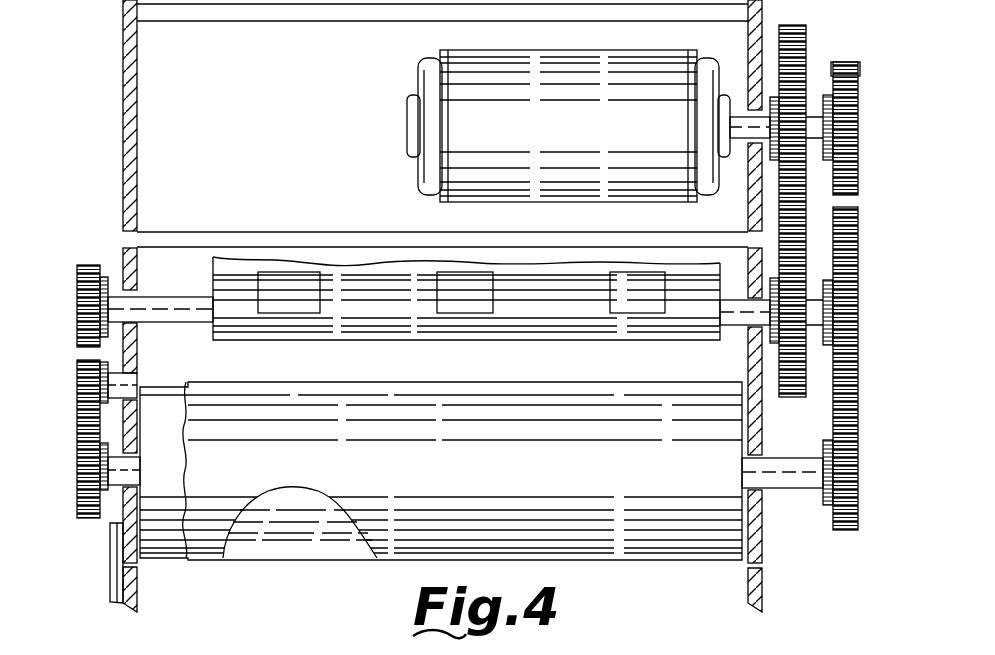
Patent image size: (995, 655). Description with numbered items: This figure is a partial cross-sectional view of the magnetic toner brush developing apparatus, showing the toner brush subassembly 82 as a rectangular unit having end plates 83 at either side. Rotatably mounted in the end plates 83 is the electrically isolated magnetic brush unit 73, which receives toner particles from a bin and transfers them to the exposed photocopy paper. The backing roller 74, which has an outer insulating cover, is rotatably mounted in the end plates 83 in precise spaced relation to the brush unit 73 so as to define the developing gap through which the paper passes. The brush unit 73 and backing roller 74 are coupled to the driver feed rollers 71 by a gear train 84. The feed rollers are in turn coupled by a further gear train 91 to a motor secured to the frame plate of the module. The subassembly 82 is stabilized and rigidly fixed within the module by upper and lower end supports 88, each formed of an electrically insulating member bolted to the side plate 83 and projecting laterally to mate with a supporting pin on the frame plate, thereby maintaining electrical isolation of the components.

The pinch rollers 71 is at (872, 232).
The magnetic brush unit 73 is at (668, 560).
The backing roller 74 is at (303, 540).
The toner brush subassembly 82 is at (123, 58).
The end plates 83 is at (123, 262).
The gear train 84 is at (70, 351).
The end supports 88 is at (110, 561).
The gear train 91 is at (562, 140).